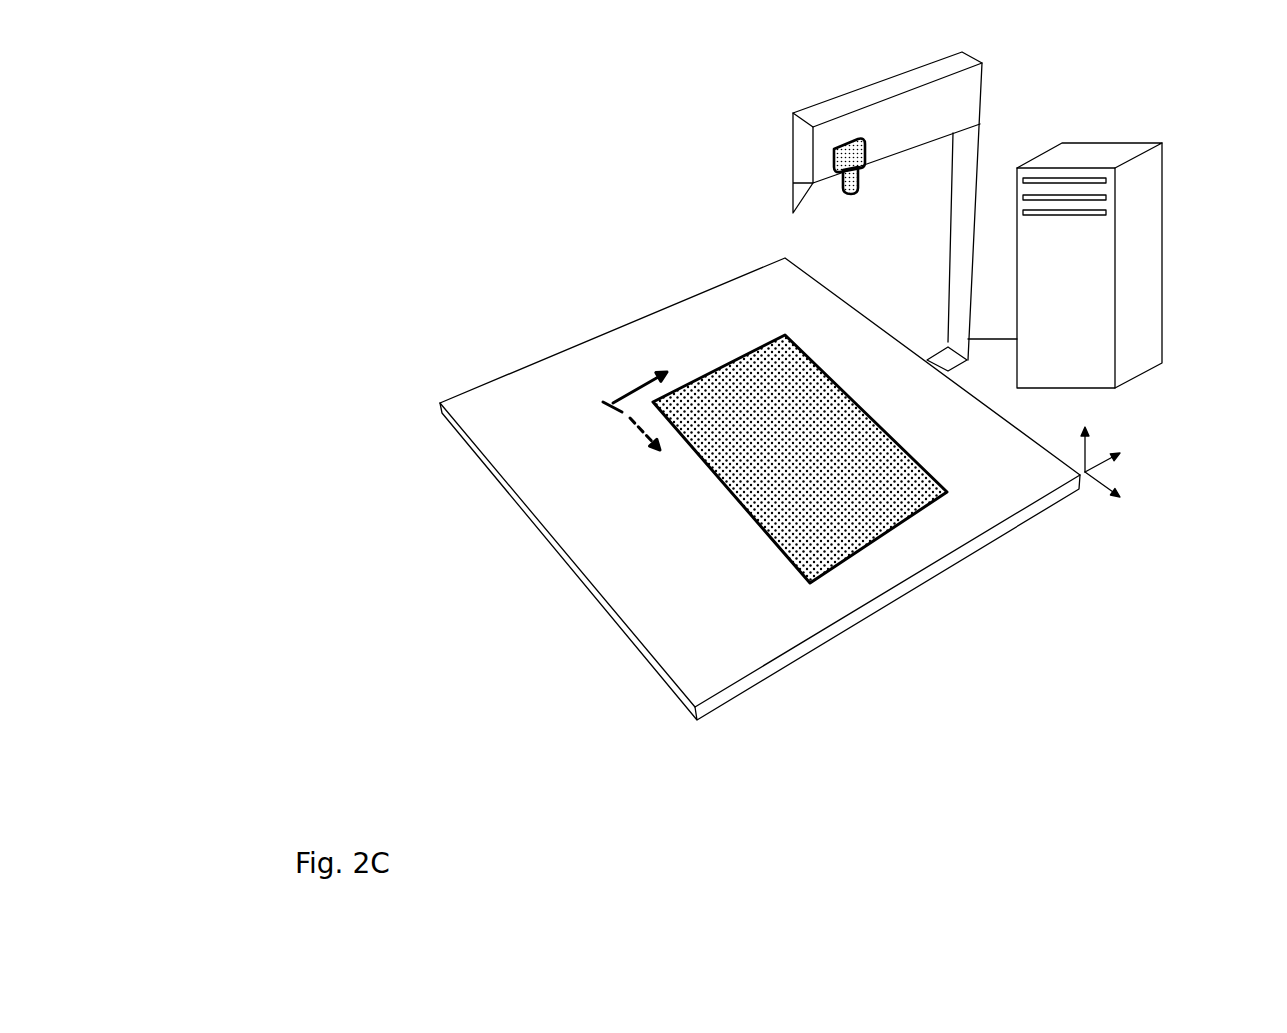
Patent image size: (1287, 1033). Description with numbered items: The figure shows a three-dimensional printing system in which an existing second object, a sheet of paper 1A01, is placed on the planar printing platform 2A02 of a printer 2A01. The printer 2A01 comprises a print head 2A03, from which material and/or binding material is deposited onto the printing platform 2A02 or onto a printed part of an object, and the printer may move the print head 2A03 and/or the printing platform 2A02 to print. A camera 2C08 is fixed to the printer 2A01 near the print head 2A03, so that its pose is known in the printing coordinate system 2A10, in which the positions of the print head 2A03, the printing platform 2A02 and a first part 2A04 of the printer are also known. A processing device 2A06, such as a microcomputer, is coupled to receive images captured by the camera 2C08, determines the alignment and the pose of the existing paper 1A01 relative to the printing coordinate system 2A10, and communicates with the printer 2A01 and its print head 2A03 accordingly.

The 3D printer 2A01 is at (592, 254).
The printing platform 2A02 is at (624, 604).
The print head 2A03 is at (780, 184).
The first part of the 3D printer 2A04 is at (591, 386).
The processing device 2A06 is at (1184, 206).
The printing coordinate system 2A10 is at (1151, 426).
The camera 2C08 is at (875, 170).
The 2D paper 1A01 is at (923, 530).